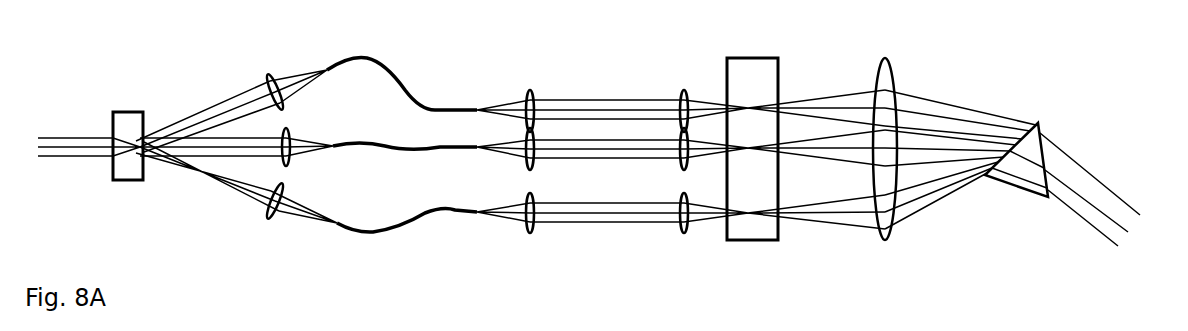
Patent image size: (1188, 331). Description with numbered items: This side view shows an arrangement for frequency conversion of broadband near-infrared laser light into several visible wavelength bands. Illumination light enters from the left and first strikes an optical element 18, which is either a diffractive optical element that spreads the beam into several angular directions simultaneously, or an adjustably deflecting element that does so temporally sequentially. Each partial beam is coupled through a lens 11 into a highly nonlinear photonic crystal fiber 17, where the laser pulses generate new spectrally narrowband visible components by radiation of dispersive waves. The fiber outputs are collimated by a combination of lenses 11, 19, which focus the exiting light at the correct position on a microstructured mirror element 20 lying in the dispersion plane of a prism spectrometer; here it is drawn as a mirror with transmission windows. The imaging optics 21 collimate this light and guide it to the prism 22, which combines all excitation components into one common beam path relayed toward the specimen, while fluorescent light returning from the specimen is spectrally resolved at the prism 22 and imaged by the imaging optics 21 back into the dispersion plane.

The lens 11 is at (274, 78).
The highly nonlinear photonic crystal fiber 17 is at (396, 70).
The optical element 18 is at (137, 182).
The lens 19 is at (683, 90).
The microstructured mirror element 20 is at (749, 58).
The imaging optics 21 is at (887, 53).
The prism 22 is at (1052, 119).